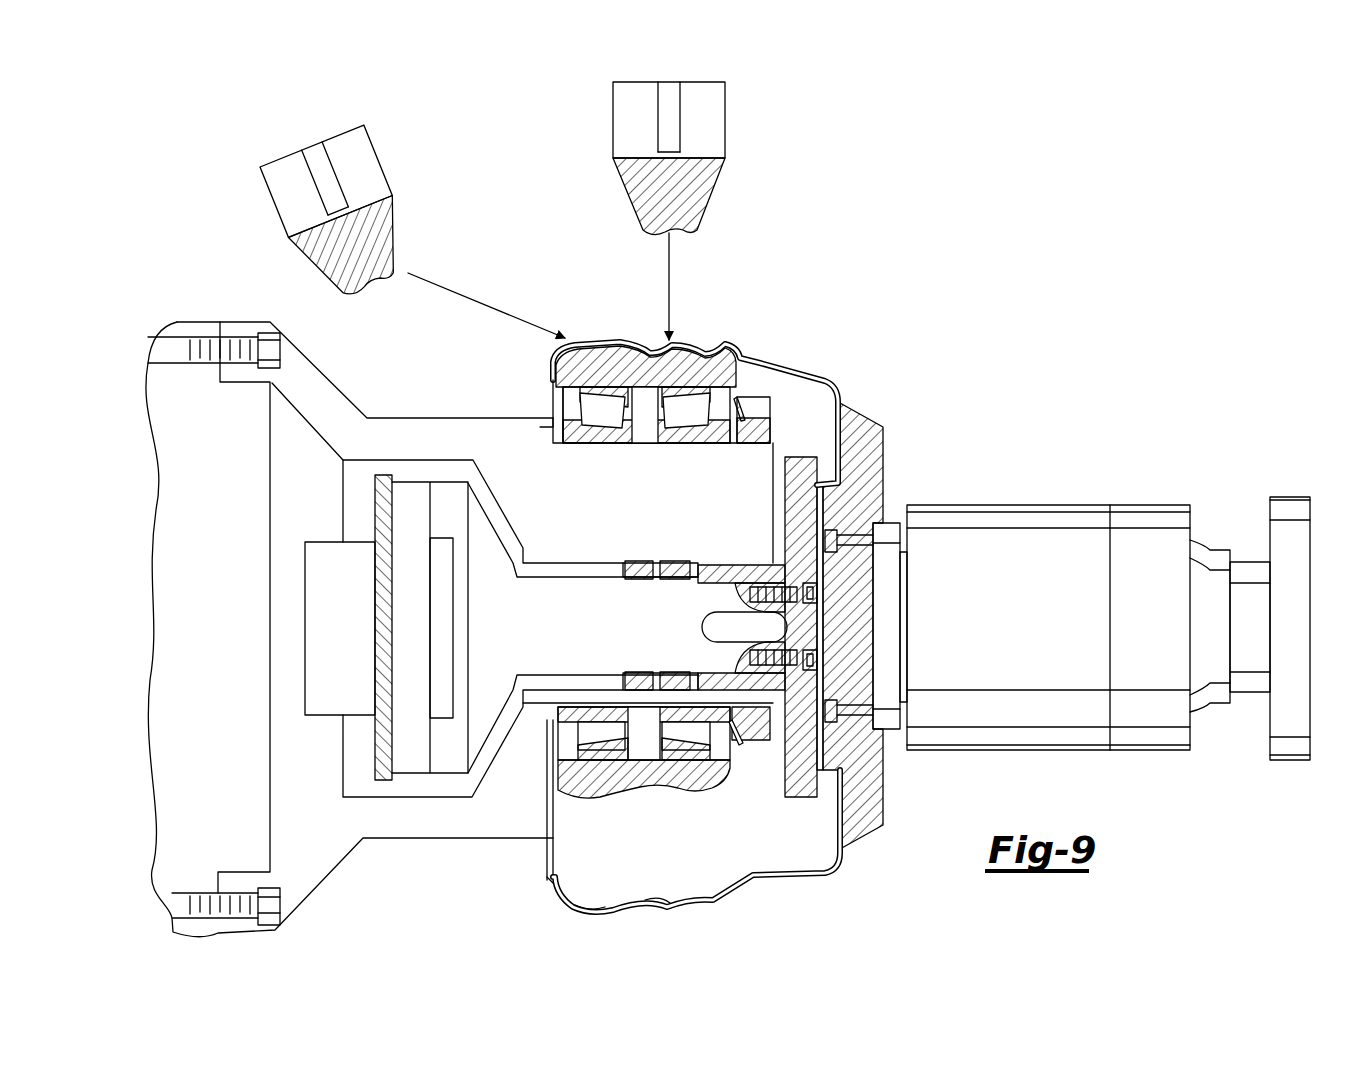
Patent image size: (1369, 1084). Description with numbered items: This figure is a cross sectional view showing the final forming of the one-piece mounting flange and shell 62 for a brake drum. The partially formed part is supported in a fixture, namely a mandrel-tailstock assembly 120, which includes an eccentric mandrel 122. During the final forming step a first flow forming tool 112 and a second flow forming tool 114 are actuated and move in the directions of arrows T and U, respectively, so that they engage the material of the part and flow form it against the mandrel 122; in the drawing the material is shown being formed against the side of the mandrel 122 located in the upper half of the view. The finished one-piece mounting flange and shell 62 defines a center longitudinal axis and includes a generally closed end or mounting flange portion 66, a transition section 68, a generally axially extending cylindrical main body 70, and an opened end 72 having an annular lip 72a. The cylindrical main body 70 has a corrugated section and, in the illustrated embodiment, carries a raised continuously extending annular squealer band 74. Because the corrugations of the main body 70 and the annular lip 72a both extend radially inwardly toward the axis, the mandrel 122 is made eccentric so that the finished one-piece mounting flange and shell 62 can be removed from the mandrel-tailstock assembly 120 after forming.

The first flow forming tool 112 is at (388, 208).
The second flow forming tool 114 is at (725, 167).
The one-piece mounting flange and shell 62 is at (760, 377).
The mandrel-tailstock assembly 120 is at (926, 360).
The eccentric mandrel 122 is at (603, 793).
The mounting flange portion 66 is at (835, 820).
The transition section 68 is at (750, 883).
The cylindrical main body 70 is at (673, 910).
The opened end 72 is at (540, 858).
The annular lip 72a is at (545, 885).
The squealer band 74 is at (605, 915).
The direction arrow of first flow forming tool T is at (498, 313).
The direction arrow of second flow forming tool U is at (669, 287).